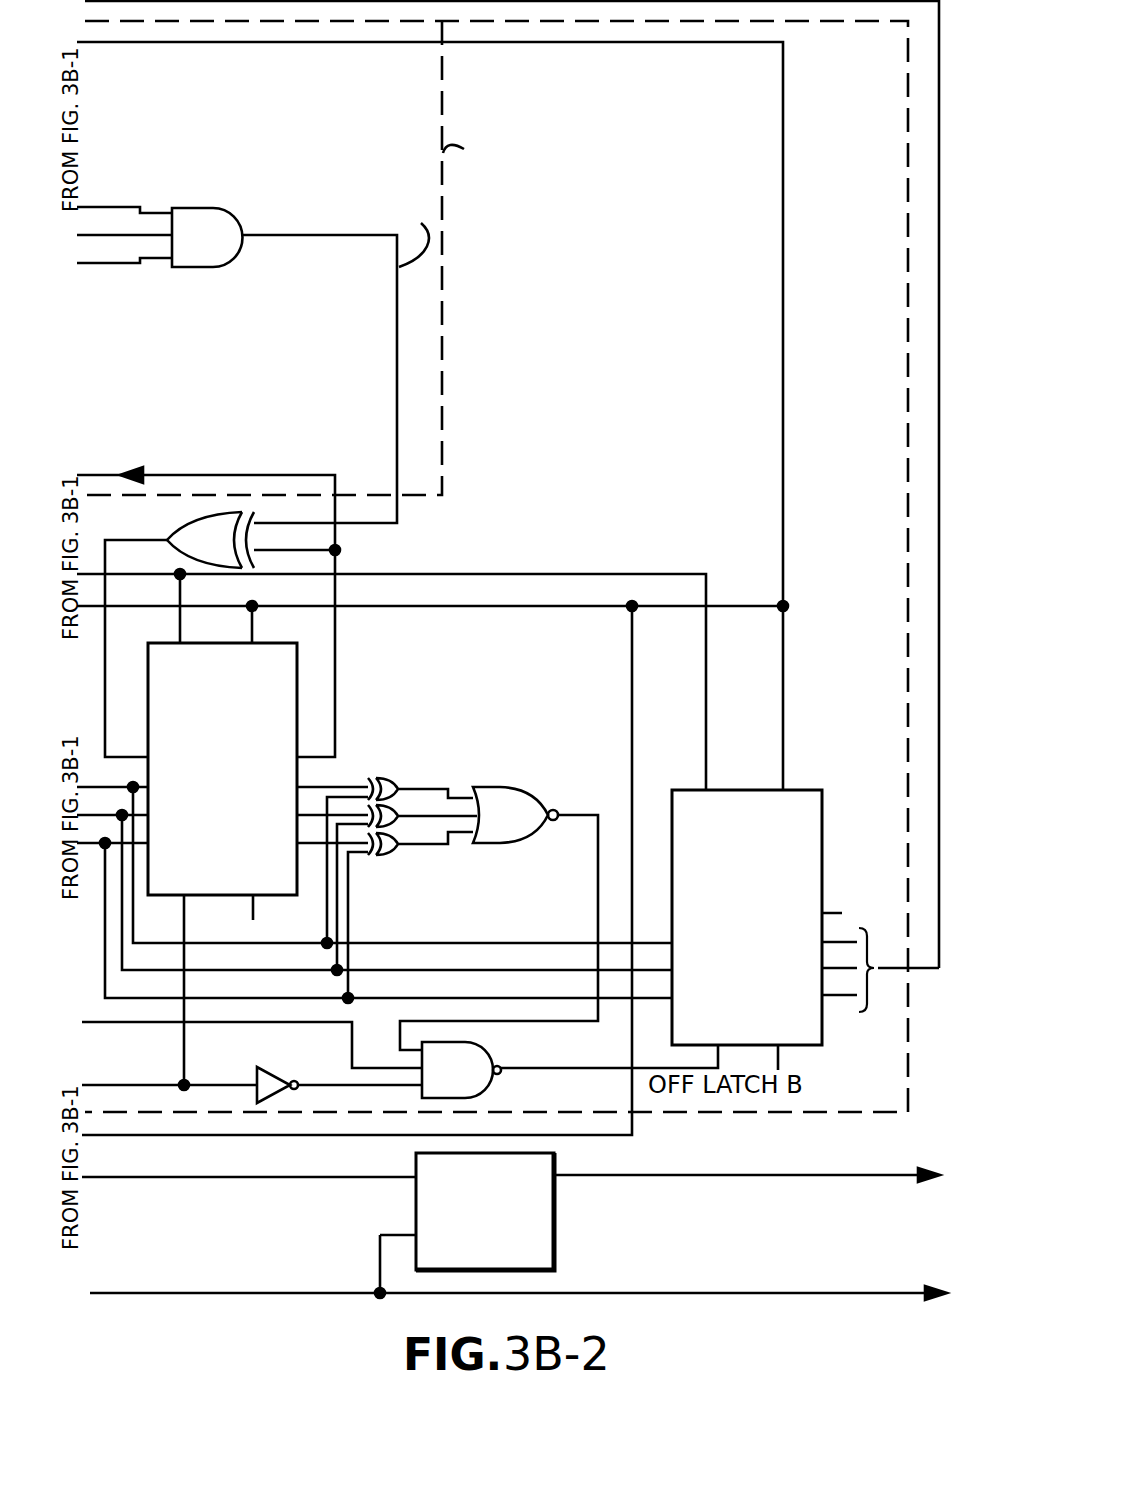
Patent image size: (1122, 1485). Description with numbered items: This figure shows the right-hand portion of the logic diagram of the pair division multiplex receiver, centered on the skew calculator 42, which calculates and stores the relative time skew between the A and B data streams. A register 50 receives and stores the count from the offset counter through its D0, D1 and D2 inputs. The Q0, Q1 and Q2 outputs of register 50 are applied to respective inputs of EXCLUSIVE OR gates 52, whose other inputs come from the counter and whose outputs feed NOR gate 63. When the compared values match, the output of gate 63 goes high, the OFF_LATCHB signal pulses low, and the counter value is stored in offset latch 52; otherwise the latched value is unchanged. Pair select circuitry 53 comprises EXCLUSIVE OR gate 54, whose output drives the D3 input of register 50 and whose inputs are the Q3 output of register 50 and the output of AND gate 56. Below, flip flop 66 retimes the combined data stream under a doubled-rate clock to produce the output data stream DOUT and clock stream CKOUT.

The skew calculator 42 is at (597, 128).
The register 50 is at (161, 643).
The offset latch 52 is at (408, 840).
The pair select circuitry 53 is at (445, 217).
The EXCLUSIVE OR gate 54 is at (171, 531).
The AND gate 56 is at (230, 207).
The NOR gate 63 is at (525, 786).
The flip flop 66 is at (554, 1221).